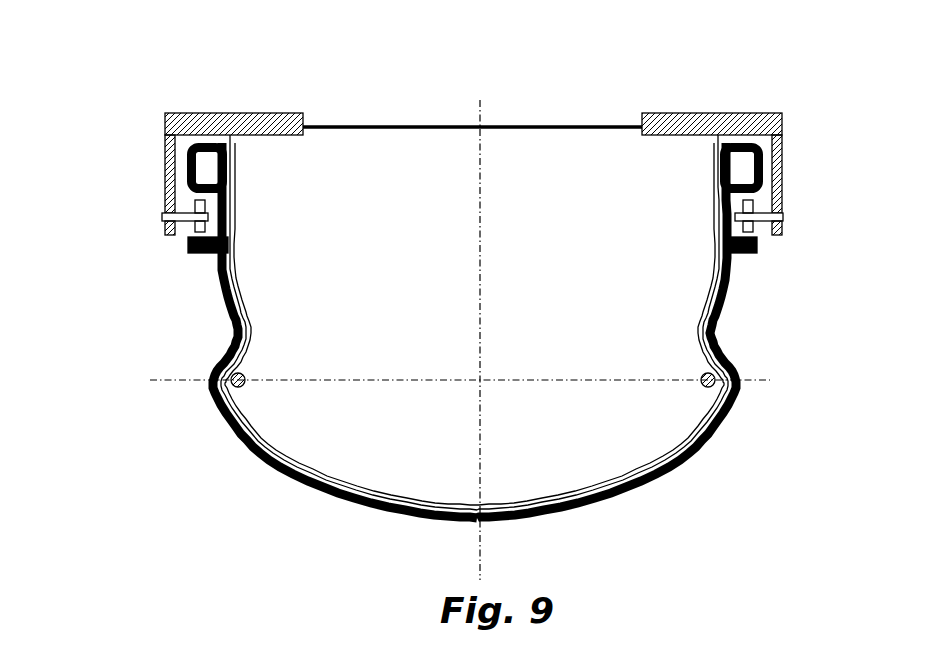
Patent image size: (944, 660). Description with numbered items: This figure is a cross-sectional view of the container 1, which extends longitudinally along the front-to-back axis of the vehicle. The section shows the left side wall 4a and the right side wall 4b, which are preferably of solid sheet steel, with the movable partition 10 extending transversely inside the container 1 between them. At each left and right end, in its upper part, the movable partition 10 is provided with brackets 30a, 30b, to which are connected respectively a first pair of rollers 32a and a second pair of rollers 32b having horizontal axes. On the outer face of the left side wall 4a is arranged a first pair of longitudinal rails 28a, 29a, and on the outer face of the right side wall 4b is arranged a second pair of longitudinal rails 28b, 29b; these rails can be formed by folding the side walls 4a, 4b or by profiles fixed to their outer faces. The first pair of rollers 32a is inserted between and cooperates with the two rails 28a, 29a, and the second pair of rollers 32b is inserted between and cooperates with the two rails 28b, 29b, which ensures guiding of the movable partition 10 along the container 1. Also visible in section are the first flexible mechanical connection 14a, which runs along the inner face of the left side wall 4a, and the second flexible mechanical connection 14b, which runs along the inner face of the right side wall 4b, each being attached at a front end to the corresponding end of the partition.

The container 1 is at (400, 92).
The movable partition 10 is at (523, 140).
The bracket 30a is at (225, 113).
The bracket 30b is at (725, 113).
The rail 28a is at (192, 168).
The rail 28b is at (752, 170).
The first pair of rollers 32a is at (202, 226).
The second pair of rollers 32b is at (744, 226).
The rail 29a is at (207, 256).
The rail 29b is at (740, 256).
The left side wall 4a is at (226, 318).
The right side wall 4b is at (724, 316).
The first flexible mechanical connection 14a is at (246, 373).
The second flexible mechanical connection 14b is at (702, 373).